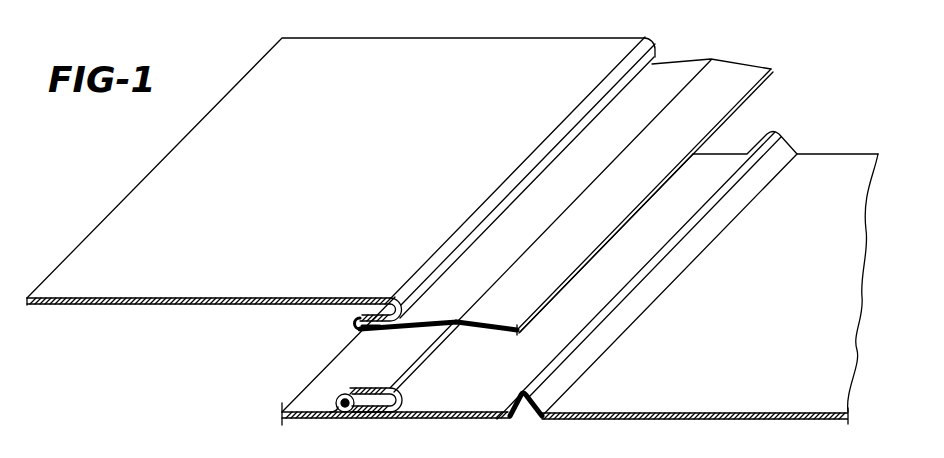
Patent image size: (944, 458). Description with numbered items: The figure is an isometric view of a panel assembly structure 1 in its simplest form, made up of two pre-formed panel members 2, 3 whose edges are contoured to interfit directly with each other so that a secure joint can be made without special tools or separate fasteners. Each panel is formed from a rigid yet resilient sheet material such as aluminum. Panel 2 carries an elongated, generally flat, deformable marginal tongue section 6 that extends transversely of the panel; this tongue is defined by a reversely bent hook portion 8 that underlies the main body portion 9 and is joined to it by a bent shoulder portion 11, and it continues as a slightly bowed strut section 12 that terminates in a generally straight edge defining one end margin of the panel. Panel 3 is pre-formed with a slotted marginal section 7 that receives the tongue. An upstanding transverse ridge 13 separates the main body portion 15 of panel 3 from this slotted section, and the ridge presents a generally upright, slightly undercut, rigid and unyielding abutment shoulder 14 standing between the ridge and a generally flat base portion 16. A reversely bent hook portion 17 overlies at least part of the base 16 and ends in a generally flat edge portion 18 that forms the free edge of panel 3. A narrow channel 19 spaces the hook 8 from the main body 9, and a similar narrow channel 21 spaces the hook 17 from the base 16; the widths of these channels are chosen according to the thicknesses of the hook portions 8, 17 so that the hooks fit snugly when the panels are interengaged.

The panel assembly structure 1 is at (777, 40).
The panel member 2 is at (330, 166).
The panel member 3 is at (764, 307).
The marginal tongue section 6 is at (537, 190).
The slotted marginal section 7 is at (453, 405).
The hook portion 8 is at (356, 324).
The main body portion 9 is at (201, 304).
The bent shoulder portion 11 is at (505, 196).
The strut section 12 is at (490, 326).
The ridge 13 is at (773, 74).
The abutment shoulder 14 is at (493, 422).
The main body portion 15 is at (752, 420).
The base portion 16 is at (530, 366).
The hook portion 17 is at (380, 416).
The edge portion 18 is at (299, 398).
The channel 19 is at (382, 305).
The channel 21 is at (341, 420).